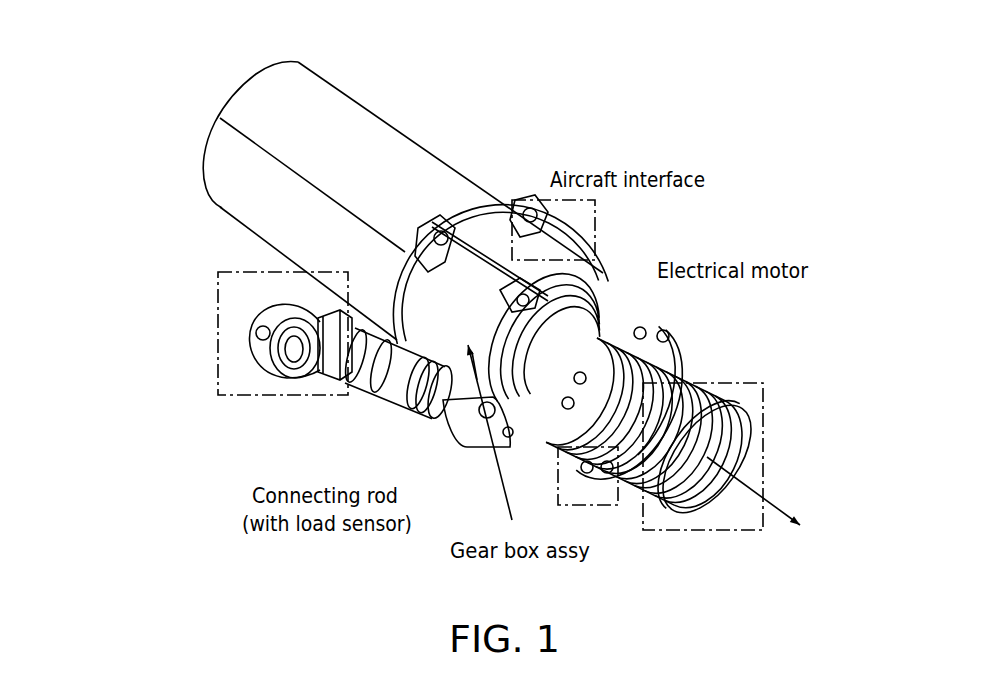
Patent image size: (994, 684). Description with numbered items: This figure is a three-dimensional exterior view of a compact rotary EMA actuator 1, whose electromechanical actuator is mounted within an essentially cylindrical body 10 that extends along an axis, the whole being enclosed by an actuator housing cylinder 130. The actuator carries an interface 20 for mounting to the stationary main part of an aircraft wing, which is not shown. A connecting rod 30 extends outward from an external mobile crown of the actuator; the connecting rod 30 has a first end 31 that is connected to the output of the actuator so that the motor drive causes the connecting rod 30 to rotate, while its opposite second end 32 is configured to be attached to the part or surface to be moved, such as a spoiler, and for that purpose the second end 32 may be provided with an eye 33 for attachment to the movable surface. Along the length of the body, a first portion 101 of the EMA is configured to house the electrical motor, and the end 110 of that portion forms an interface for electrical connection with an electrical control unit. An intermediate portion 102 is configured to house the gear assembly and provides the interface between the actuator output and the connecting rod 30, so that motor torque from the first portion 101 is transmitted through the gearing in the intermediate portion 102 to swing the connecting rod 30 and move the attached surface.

The compact rotary EMA actuator 1 is at (493, 123).
The cylindrical body 10 is at (212, 213).
The interface 20 is at (535, 268).
The connecting rod 30 is at (378, 397).
The first end 31 is at (442, 413).
The second end 32 is at (300, 378).
The eye 33 is at (290, 352).
The first portion 101 is at (680, 360).
The intermediate portion 102 is at (552, 256).
The end 110 is at (727, 430).
The actuator housing cylinder 130 is at (337, 89).